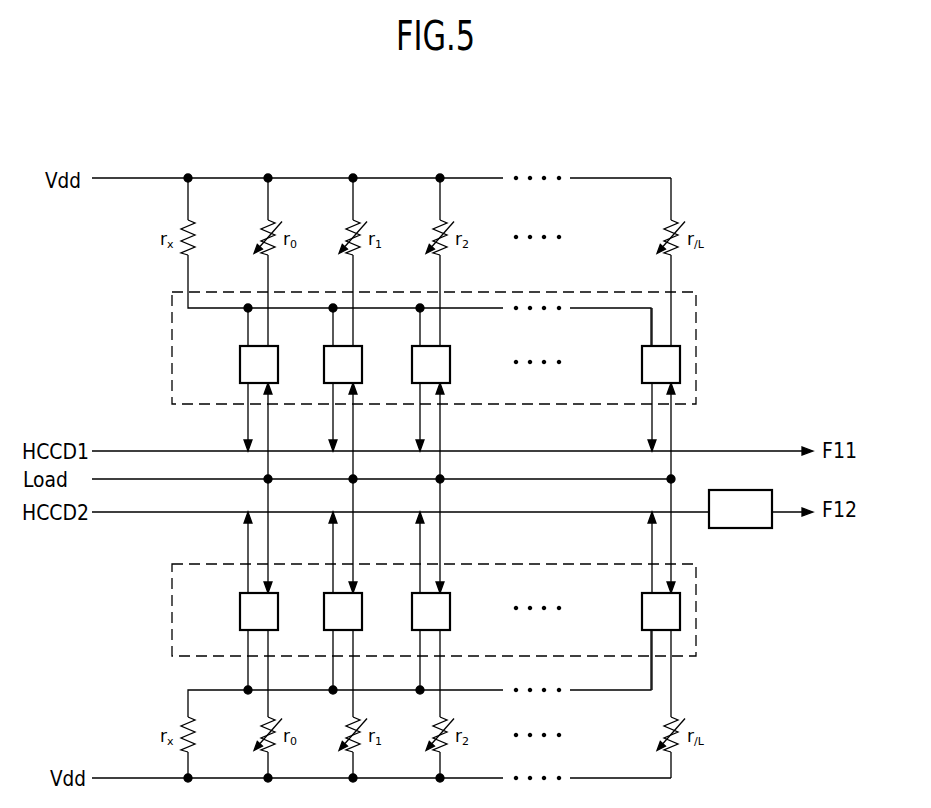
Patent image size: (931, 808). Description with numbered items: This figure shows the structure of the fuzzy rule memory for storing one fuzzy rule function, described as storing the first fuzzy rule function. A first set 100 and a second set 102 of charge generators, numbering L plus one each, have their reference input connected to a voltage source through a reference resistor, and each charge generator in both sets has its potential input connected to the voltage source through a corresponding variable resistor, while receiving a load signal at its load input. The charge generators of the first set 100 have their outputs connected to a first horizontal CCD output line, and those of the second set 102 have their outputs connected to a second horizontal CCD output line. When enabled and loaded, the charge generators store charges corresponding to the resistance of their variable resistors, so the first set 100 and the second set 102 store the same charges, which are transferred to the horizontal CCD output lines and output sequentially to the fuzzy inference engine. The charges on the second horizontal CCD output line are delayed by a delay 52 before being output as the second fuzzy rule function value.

The first set of charge generators 100 is at (696, 345).
The second set of charge generators 102 is at (172, 608).
The delay 52 is at (740, 529).